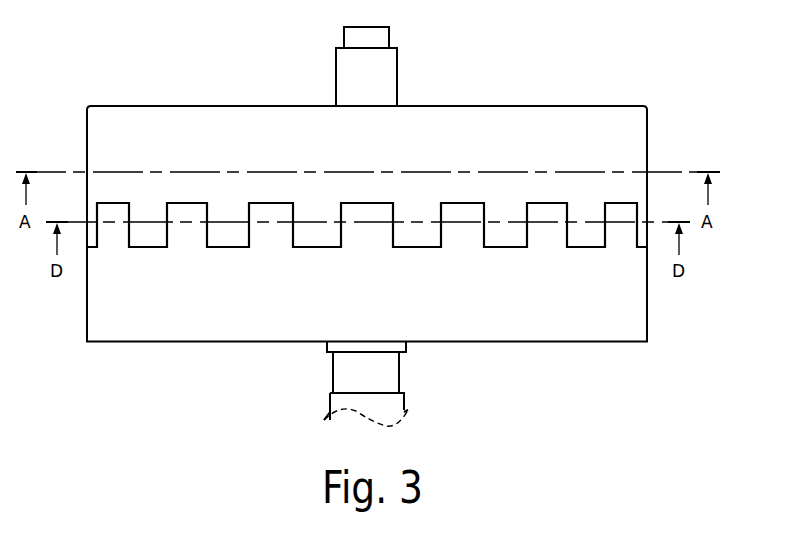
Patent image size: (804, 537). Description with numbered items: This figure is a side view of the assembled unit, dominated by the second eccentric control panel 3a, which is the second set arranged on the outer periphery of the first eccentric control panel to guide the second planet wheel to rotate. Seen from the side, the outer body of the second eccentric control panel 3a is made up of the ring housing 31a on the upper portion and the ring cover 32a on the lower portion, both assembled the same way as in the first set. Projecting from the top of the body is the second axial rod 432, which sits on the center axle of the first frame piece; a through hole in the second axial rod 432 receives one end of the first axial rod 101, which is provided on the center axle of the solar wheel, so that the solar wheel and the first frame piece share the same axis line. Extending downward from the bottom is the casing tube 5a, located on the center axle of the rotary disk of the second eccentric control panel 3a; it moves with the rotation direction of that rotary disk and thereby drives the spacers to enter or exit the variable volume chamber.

The second eccentric control panel 3a is at (366, 237).
The ring housing 31a is at (619, 142).
The ring cover 32a is at (541, 332).
The first axial rod 101 is at (349, 36).
The second axial rod 432 is at (386, 83).
The casing tube 5a is at (349, 368).